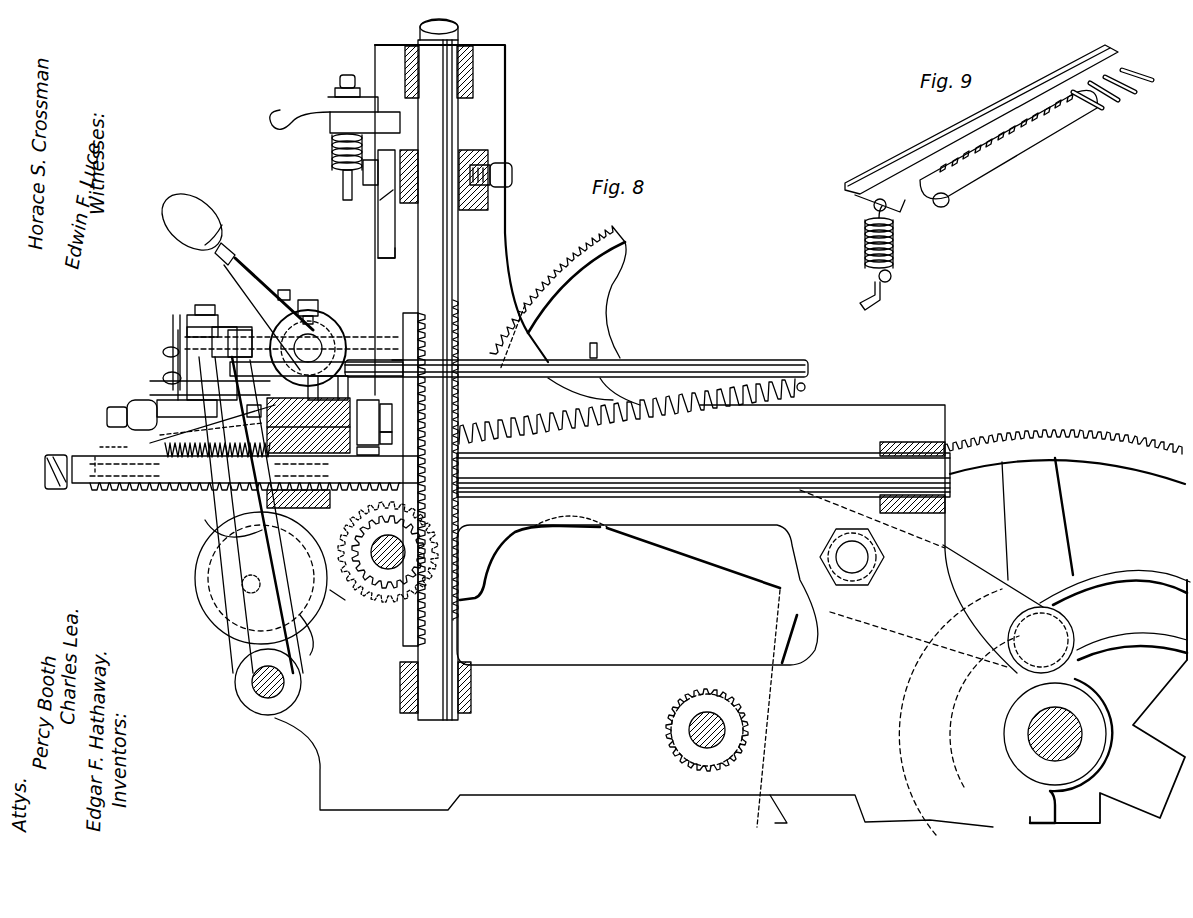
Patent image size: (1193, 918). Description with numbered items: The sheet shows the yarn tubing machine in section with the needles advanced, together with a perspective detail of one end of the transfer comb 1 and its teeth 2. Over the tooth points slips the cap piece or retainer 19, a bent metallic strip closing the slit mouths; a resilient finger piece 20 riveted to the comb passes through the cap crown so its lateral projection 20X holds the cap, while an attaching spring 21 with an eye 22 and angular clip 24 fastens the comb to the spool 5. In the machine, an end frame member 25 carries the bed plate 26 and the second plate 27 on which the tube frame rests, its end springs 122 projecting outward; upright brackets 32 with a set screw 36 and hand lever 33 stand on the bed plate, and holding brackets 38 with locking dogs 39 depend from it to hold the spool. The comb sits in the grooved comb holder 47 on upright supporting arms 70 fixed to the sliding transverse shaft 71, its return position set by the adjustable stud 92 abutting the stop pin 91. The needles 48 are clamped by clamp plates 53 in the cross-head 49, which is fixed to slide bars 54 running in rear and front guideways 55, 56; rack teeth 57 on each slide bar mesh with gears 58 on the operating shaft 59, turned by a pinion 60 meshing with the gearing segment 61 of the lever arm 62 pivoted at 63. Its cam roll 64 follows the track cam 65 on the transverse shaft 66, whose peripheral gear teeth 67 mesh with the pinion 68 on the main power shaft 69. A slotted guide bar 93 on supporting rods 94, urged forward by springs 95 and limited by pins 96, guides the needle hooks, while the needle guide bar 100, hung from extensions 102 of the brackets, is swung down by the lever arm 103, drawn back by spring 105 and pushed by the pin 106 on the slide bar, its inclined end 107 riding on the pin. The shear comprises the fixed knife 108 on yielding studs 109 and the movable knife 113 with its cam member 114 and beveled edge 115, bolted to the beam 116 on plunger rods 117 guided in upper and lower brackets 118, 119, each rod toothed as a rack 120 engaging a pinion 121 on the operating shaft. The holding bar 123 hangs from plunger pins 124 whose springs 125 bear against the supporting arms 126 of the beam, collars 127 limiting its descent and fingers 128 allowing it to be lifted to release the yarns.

In FIG. 9, the index plate end 1 is at (1120, 60).
In FIG. 9, the teeth of index plate 2 is at (1130, 88).
In FIG. 8, the spool 5 is at (222, 605).
In FIG. 8, the cap piece or retainer 19 is at (170, 342).
In FIG. 9, the cap piece or retainer 19 is at (1035, 150).
In FIG. 9, the resilient finger piece 20 is at (900, 172).
In FIG. 9, the lateral projection 20X is at (944, 207).
In FIG. 8, the spring 21 is at (163, 350).
In FIG. 9, the spring 21 is at (864, 240).
In FIG. 8, the eye 22 is at (163, 375).
In FIG. 9, the eye 22 is at (892, 274).
In FIG. 9, the angular clip 24 is at (880, 302).
In FIG. 8, the end frame members 25 is at (608, 680).
In FIG. 8, the bed piece or plate 26 is at (340, 453).
In FIG. 8, the second plate 27 is at (335, 345).
In FIG. 8, the upright brackets 32 is at (310, 300).
In FIG. 8, the hand lever 33 is at (190, 222).
In FIG. 8, the set screw 36 is at (283, 290).
In FIG. 8, the holding brackets 38 is at (312, 640).
In FIG. 8, the locking dog or shoe 39 is at (205, 520).
In FIG. 8, the grooved comb holder 47 is at (178, 330).
In FIG. 8, the needles 48 is at (345, 365).
In FIG. 8, the cross-head or holder 49 is at (405, 410).
In FIG. 8, the clamp plates 53 is at (405, 395).
In FIG. 8, the slide bar 54 is at (652, 465).
In FIG. 8, the bearing or guideway 55 is at (908, 445).
In FIG. 8, the bearing or guideway 56 is at (215, 532).
In FIG. 8, the rack teeth 57 is at (108, 490).
In FIG. 8, the gears 58 is at (358, 600).
In FIG. 8, the operating shaft 59 is at (458, 535).
In FIG. 8, the pinion 60 is at (380, 590).
In FIG. 8, the gearing segment 61 is at (572, 262).
In FIG. 8, the lever arm 62 is at (722, 560).
In FIG. 8, the pivot 63 is at (860, 565).
In FIG. 8, the cam roll 64 is at (1041, 612).
In FIG. 8, the track cam 65 is at (1122, 600).
In FIG. 8, the transverse shaft 66 is at (1040, 730).
In FIG. 8, the gear teeth 67 is at (1040, 435).
In FIG. 8, the pinion 68 is at (670, 722).
In FIG. 8, the main power shaft 69 is at (725, 727).
In FIG. 8, the upright supporting arms 70 is at (222, 560).
In FIG. 8, the transverse shaft 71 is at (265, 690).
In FIG. 8, the adjustable stop pin 91 is at (255, 375).
In FIG. 8, the adjustable stud 92 is at (160, 430).
In FIG. 8, the transverse guide bar 93 is at (400, 358).
In FIG. 8, the supporting rods 94 is at (672, 366).
In FIG. 8, the spring 95 is at (545, 420).
In FIG. 8, the pin 96 is at (592, 343).
In FIG. 8, the needle guide bar 100 is at (232, 326).
In FIG. 8, the extensions 102 is at (262, 330).
In FIG. 8, the depending lever arm 103 is at (108, 410).
In FIG. 8, the spring 105 is at (268, 498).
In FIG. 8, the pin 106 is at (150, 490).
In FIG. 8, the inclined end 107 is at (118, 457).
In FIG. 8, the vertically fixed knife 108 is at (366, 448).
In FIG. 8, the studs 109 is at (372, 440).
In FIG. 8, the vertically movable knife 113 is at (388, 198).
In FIG. 8, the cam member 114 is at (392, 225).
In FIG. 8, the lower beveled edge 115 is at (380, 258).
In FIG. 8, the transverse supporting beam 116 is at (480, 150).
In FIG. 8, the plunger rod 117 is at (445, 280).
In FIG. 8, the upper bracket 118 is at (475, 78).
In FIG. 8, the lower bracket 119 is at (470, 698).
In FIG. 8, the rack 120 is at (412, 313).
In FIG. 8, the pinion 121 is at (398, 590).
In FIG. 8, the end springs 122 is at (142, 400).
In FIG. 8, the holding bar 123 is at (343, 184).
In FIG. 8, the vertical plunger pins 124 is at (332, 146).
In FIG. 8, the coiled spring 125 is at (332, 160).
In FIG. 8, the overhanging supporting arm 126 is at (366, 115).
In FIG. 8, the collar 127 is at (336, 90).
In FIG. 8, the forwardly directed finger 128 is at (290, 112).